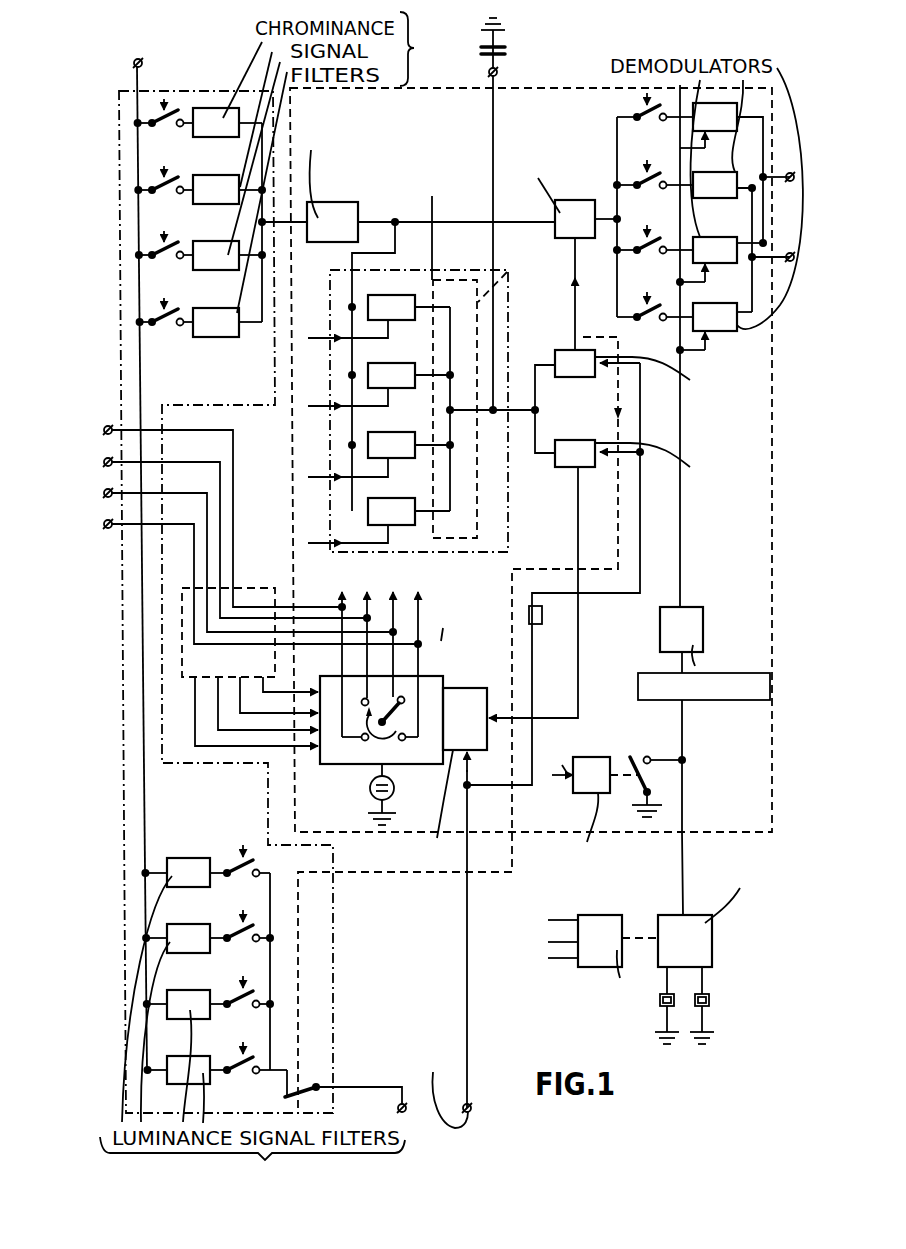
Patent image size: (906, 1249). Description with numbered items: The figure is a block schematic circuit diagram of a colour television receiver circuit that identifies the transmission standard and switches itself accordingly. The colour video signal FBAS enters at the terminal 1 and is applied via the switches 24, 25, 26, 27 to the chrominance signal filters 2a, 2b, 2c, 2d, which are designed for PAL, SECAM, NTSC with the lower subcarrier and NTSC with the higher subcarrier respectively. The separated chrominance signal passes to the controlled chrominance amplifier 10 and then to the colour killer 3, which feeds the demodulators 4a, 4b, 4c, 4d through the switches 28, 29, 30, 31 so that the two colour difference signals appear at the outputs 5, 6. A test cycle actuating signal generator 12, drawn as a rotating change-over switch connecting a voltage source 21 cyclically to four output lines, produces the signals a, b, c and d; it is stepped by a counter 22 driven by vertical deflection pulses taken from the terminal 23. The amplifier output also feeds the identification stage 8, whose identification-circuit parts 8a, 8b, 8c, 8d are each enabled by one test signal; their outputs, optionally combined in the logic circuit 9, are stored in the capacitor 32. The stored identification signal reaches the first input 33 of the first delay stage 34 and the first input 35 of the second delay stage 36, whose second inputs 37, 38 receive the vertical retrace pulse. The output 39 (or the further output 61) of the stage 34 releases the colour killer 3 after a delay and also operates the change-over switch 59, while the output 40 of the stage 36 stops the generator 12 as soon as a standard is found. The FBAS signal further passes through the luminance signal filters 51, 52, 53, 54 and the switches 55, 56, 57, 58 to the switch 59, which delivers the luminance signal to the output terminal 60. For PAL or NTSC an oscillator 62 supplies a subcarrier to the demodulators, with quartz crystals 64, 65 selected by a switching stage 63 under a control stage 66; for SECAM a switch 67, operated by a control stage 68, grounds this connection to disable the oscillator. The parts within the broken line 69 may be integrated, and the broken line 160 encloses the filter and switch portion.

The terminal 1 is at (134, 64).
The chrominance signal filter 2a is at (210, 138).
The chrominance signal filter 2b is at (210, 205).
The chrominance signal filter 2c is at (210, 270).
The chrominance signal filter 2d is at (210, 337).
The colour killer 3 is at (560, 184).
The demodulator 4a is at (721, 173).
The demodulator 4b is at (727, 198).
The demodulator 4c is at (727, 263).
The demodulator 4d is at (727, 331).
The output 5 is at (779, 194).
The output 6 is at (774, 235).
The identification stage 8 is at (424, 268).
The identification-circuit part 8a is at (394, 282).
The identification-circuit part 8b is at (394, 350).
The identification-circuit part 8c is at (394, 419).
The identification-circuit part 8d is at (394, 485).
The logic circuit 9 is at (441, 280).
The controlled chrominance amplifier 10 is at (328, 185).
The test cycle actuating signal generator 12 is at (430, 675).
The voltage source 21 is at (394, 789).
The counter 22 is at (472, 688).
The terminal 23 is at (476, 1110).
The switch 24 is at (168, 117).
The switch 25 is at (168, 184).
The switch 26 is at (168, 249).
The switch 27 is at (168, 316).
The switch 28 is at (640, 126).
The switch 29 is at (640, 195).
The switch 30 is at (640, 258).
The switch 31 is at (658, 320).
The capacitor 32 is at (487, 69).
The first input 33 is at (555, 362).
The first delay stage 34 is at (575, 373).
The first input 35 is at (556, 462).
The second delay stage 36 is at (590, 440).
The second input 37 is at (597, 370).
The second input 38 is at (596, 458).
The output 39 is at (557, 350).
The output 40 is at (568, 470).
The luminance signal filter 51 is at (184, 858).
The luminance signal filter 52 is at (184, 924).
The luminance signal filter 53 is at (184, 990).
The luminance signal filter 54 is at (184, 1056).
The switch 55 is at (242, 882).
The switch 56 is at (242, 947).
The switch 57 is at (242, 1013).
The switch 58 is at (242, 1077).
The change-over switch 59 is at (300, 1090).
The output terminal 60 is at (398, 1108).
The output 61 is at (568, 350).
The oscillator 62 is at (660, 626).
The switching stage 63 is at (692, 915).
The quartz crystal 64 is at (659, 1000).
The quartz crystal 65 is at (710, 1000).
The control stage 66 is at (586, 915).
The switch 67 is at (644, 758).
The control stage 68 is at (578, 792).
The broken line 69 is at (550, 88).
The broken line 160 is at (125, 776).